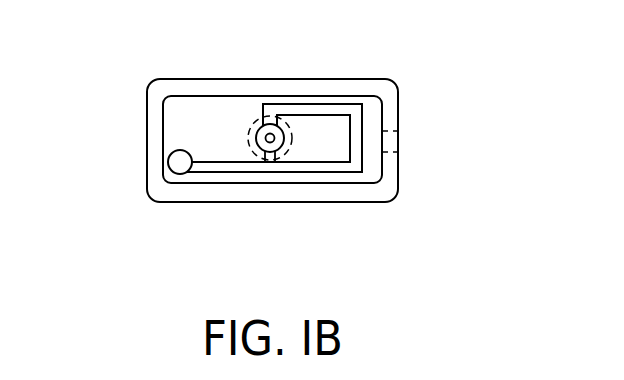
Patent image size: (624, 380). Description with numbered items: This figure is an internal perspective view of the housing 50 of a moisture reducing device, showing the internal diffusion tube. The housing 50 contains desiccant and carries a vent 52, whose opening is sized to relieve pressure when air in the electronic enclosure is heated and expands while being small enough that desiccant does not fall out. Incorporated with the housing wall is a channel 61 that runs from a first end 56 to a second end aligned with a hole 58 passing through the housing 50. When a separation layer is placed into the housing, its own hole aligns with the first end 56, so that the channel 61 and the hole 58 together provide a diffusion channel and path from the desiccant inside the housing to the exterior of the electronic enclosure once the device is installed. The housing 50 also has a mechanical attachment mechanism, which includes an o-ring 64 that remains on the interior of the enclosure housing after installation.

The housing 50 is at (258, 203).
The vent 52 is at (400, 142).
The first end 56 is at (182, 160).
The hole 58 is at (275, 138).
The channel 61 is at (332, 105).
The o-ring 64 is at (257, 123).